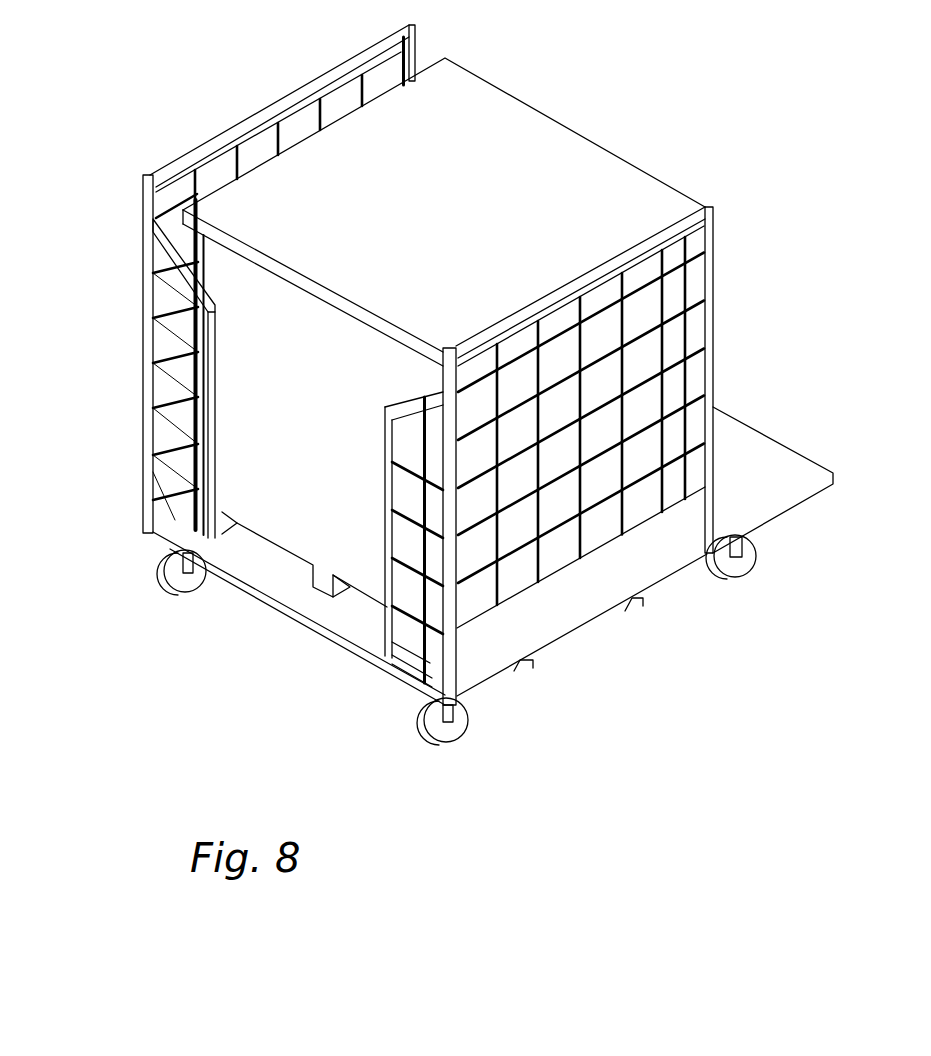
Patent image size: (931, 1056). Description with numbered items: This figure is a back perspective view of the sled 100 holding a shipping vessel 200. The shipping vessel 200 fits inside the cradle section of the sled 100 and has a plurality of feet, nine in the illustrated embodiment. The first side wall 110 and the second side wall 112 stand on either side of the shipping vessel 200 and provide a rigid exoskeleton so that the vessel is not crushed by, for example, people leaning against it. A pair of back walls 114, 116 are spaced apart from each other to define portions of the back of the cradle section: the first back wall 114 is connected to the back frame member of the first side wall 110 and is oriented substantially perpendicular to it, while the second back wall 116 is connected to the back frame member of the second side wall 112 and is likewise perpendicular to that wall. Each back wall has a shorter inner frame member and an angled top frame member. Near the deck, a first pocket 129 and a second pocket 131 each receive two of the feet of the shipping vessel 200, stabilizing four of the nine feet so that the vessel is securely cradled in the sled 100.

The sled 100 is at (121, 314).
The first side wall 110 is at (691, 203).
The second side wall 112 is at (167, 140).
The first back wall 114 is at (435, 416).
The second back wall 116 is at (181, 314).
The first pocket 129 is at (402, 672).
The second pocket 131 is at (177, 543).
The shipping vessel 200 is at (300, 501).